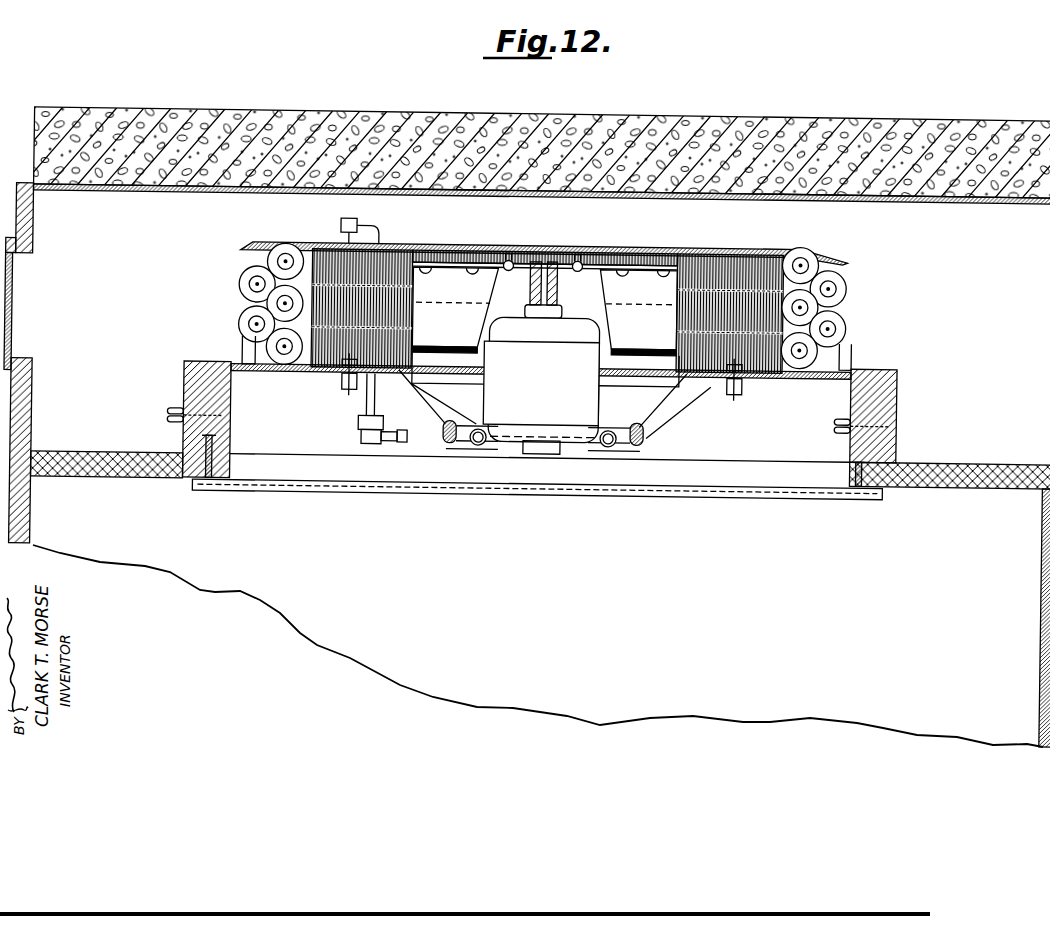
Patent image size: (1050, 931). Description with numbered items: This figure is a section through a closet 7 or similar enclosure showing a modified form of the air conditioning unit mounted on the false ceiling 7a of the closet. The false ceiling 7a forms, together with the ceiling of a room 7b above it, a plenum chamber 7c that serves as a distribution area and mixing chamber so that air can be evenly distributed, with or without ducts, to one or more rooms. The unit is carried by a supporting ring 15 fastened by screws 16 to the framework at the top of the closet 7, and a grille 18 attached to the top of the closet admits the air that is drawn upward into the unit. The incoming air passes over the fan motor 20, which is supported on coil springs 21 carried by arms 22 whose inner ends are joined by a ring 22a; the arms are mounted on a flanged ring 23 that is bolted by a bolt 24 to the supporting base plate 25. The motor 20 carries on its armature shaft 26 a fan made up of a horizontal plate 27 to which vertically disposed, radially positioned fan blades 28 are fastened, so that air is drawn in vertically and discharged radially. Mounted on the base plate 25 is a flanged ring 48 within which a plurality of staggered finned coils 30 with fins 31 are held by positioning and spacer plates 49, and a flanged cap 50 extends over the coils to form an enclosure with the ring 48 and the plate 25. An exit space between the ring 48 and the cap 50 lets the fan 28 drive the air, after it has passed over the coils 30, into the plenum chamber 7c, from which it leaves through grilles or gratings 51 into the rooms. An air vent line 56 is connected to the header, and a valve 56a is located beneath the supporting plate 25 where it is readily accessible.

The closet 7 is at (806, 615).
The false ceiling 7a is at (947, 484).
The ceiling of a room 7b is at (956, 198).
The plenum chamber 7c is at (897, 428).
The supporting ring 15 is at (316, 451).
The screws 16 is at (238, 420).
The grille 18 is at (793, 498).
The fan motor 20 is at (588, 404).
The coil springs 21 is at (480, 448).
The arms 22 is at (432, 424).
The ring 22a is at (645, 446).
The flanged ring 23 is at (468, 372).
The bolt 24 is at (350, 393).
The supporting base plate 25 is at (292, 380).
The armature shaft 26 is at (541, 322).
The horizontal plate 27 is at (638, 313).
The fan blades 28 is at (441, 294).
The finned coils 30 is at (245, 285).
The fins 31 is at (247, 297).
The flanged ring 48 is at (243, 356).
The positioning and spacer plates 49 is at (313, 251).
The flanged cap 50 is at (449, 246).
The grilles or gratings 51 is at (12, 297).
The air vent line 56 is at (366, 234).
The valve 56a is at (402, 441).